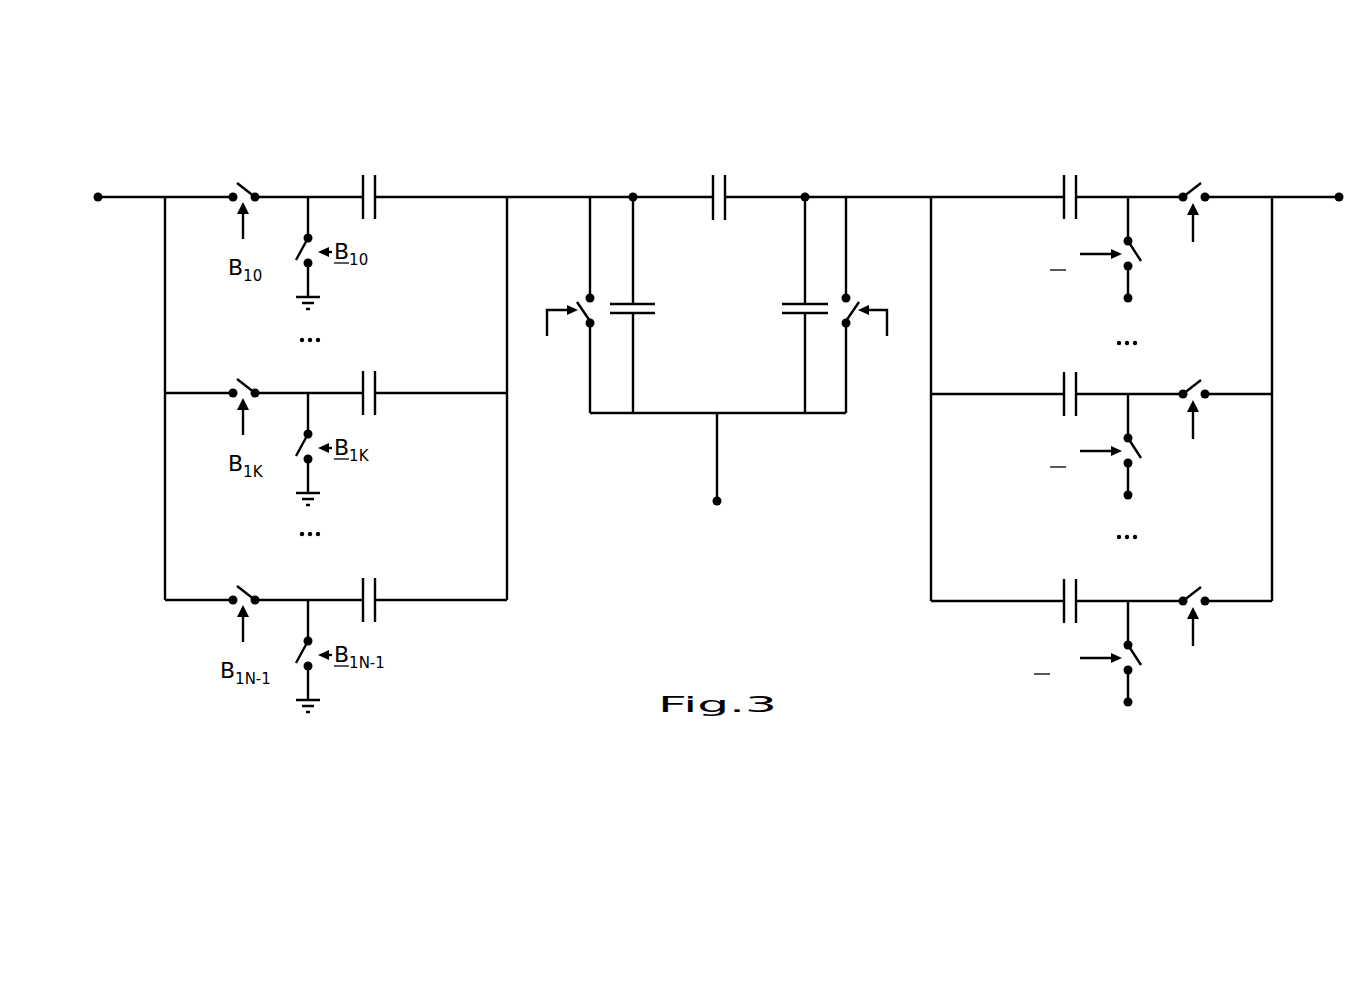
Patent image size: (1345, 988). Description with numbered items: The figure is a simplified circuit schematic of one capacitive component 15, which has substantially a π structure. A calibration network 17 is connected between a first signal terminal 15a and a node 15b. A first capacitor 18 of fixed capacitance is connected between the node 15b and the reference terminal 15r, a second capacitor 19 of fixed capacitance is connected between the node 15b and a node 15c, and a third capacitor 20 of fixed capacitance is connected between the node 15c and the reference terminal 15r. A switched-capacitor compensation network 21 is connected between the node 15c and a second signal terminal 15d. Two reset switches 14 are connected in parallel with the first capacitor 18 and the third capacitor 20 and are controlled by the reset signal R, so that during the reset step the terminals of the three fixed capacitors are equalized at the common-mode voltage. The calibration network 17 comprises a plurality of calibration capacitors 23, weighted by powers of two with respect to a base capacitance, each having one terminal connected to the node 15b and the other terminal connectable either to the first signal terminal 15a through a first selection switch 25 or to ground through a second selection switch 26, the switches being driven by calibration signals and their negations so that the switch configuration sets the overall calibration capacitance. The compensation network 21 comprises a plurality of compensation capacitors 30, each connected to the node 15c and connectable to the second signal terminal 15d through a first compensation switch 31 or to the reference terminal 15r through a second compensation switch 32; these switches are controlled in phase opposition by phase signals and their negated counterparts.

The capacitive component 15 is at (938, 106).
The first signal terminal 15a is at (99, 195).
The node 15b is at (633, 194).
The node 15c is at (806, 194).
The second signal terminal 15d is at (1339, 194).
The reference terminal 15r is at (722, 503).
The reset switches 14 is at (580, 300).
The calibration network 17 is at (471, 658).
The first capacitor 18 is at (640, 316).
The second capacitor 19 is at (727, 174).
The third capacitor 20 is at (798, 316).
The compensation network 21 is at (972, 640).
The calibration capacitors 23 is at (378, 186).
The first selection switch 25 is at (238, 182).
The second selection switch 26 is at (296, 256).
The compensation capacitors 30 is at (1062, 190).
The first compensation switch 31 is at (1200, 183).
The second compensation switch 32 is at (1138, 250).